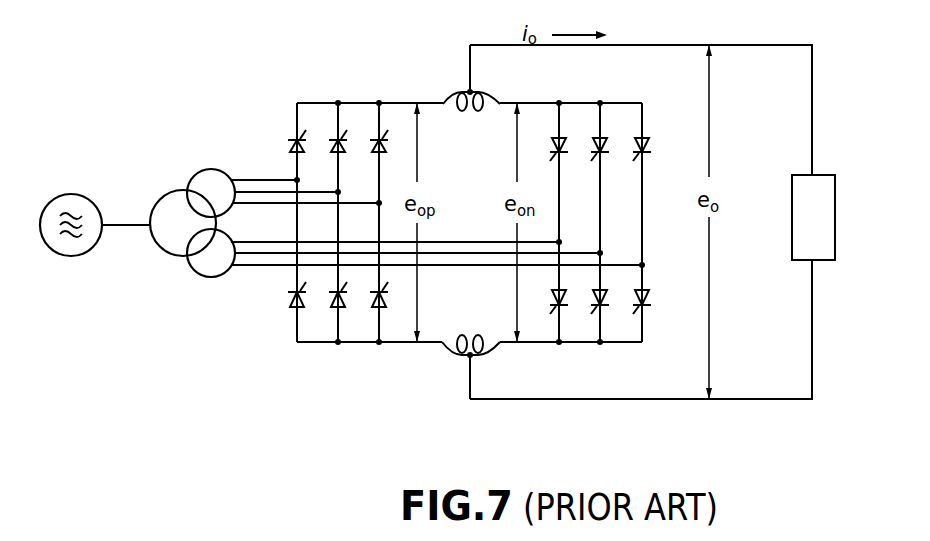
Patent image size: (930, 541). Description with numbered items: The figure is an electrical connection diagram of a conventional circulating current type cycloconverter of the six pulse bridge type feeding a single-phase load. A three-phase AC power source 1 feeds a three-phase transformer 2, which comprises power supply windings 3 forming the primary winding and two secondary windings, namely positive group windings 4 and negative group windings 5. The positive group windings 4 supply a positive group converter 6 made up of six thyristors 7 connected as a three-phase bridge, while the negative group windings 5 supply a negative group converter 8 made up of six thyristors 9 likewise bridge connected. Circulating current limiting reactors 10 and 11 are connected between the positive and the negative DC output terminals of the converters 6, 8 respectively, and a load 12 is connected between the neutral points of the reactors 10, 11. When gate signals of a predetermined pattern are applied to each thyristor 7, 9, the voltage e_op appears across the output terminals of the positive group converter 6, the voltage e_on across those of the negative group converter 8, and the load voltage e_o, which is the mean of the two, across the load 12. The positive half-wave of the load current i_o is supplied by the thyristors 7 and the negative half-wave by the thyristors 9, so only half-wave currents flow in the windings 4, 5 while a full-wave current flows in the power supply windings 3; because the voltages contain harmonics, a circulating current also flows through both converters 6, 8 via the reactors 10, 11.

The three-phase AC power source 1 is at (77, 193).
The three-phase transformer 2 is at (175, 213).
The power supply windings 3 is at (153, 246).
The positive group windings 4 is at (210, 168).
The negative group windings 5 is at (210, 278).
The positive group converter 6 is at (365, 191).
The thyristor 7 is at (345, 145).
The negative group converter 8 is at (593, 201).
The thyristor 9 is at (648, 146).
The circulating current limiting reactor 10 is at (480, 90).
The circulating current limiting reactor 11 is at (485, 355).
The load 12 is at (792, 220).